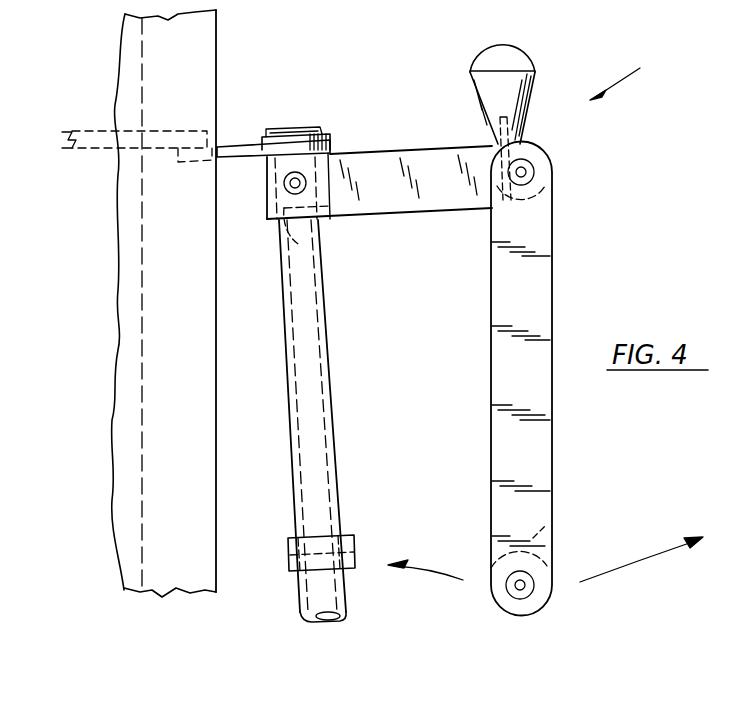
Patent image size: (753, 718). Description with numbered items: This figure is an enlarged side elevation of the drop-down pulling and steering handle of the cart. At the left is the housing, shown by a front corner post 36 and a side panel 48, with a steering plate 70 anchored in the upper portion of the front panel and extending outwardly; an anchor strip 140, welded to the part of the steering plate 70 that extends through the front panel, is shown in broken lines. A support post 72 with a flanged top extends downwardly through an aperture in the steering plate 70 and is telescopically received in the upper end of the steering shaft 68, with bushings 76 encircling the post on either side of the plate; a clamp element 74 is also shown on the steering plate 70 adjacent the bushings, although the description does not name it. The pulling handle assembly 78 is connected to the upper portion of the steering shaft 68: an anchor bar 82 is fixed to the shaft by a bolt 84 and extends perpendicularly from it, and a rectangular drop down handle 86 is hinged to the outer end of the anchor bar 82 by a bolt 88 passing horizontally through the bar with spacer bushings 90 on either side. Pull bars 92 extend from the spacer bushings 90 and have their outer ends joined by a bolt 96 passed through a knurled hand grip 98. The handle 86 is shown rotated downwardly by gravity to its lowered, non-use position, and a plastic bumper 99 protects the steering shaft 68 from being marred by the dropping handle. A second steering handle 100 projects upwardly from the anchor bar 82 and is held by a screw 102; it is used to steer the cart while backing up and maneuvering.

The front corner post 36 is at (118, 350).
The side panel 48 is at (193, 413).
The anchor strip 140 is at (88, 130).
The steering plate 70 is at (244, 146).
The clamp 74 is at (312, 128).
The bushing 76 is at (336, 148).
The anchor bar 82 is at (392, 207).
The bolt 84 is at (285, 184).
The support post 72 is at (278, 250).
The steering shaft 68 is at (330, 350).
The plastic bumper 99 is at (290, 545).
The drop down handle 86 is at (540, 290).
The pull bar 92 is at (495, 425).
The bolt 88 is at (528, 173).
The spacer bushing 90 is at (556, 200).
The second steering handle 100 is at (520, 52).
The screw 102 is at (495, 140).
The bolt 96 is at (515, 590).
The knurled hand grip 98 is at (548, 522).
The pulling handle assembly 78 is at (545, 319).